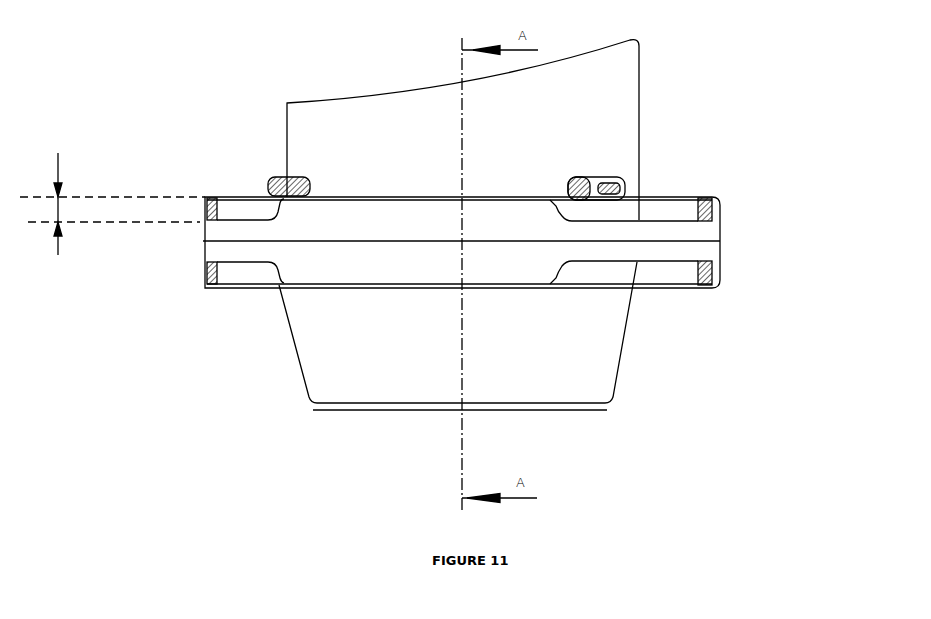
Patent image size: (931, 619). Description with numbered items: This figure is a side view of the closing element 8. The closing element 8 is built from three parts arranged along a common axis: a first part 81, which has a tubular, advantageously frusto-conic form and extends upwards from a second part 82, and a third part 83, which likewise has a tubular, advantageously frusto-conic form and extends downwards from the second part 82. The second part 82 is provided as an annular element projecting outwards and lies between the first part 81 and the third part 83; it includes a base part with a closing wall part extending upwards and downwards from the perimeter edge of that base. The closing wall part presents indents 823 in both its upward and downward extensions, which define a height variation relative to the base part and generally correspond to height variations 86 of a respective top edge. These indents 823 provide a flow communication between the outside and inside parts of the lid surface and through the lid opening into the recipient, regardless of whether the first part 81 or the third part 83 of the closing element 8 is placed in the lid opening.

The closing element 8 is at (425, 217).
The first part 81 is at (292, 146).
The second part 82 is at (206, 246).
The indents 823 is at (718, 237).
The third part 83 is at (302, 354).
The height variations 86 is at (60, 164).